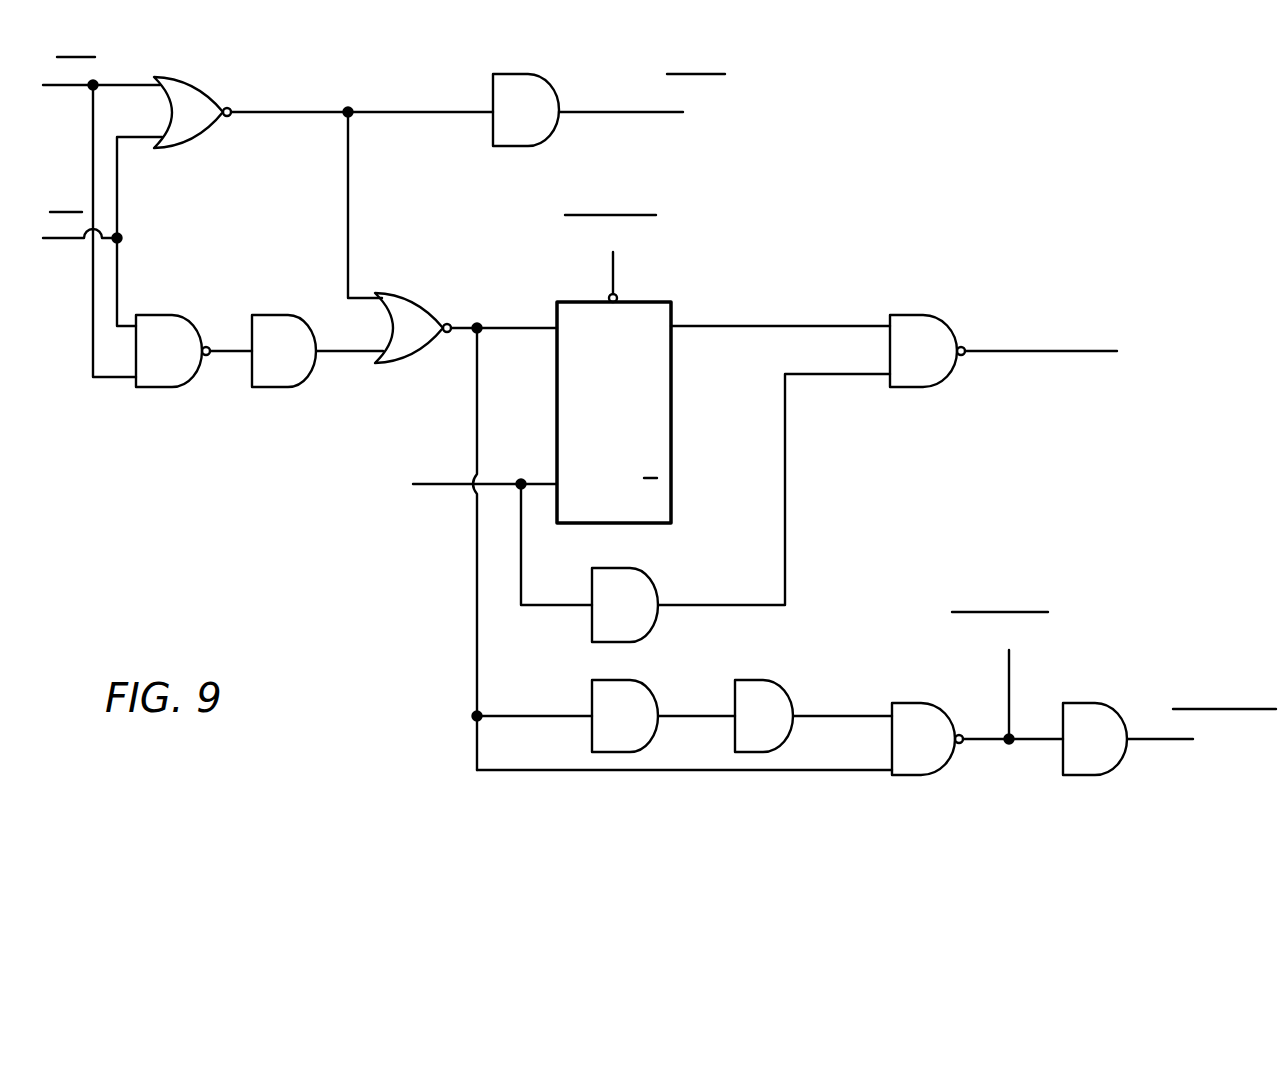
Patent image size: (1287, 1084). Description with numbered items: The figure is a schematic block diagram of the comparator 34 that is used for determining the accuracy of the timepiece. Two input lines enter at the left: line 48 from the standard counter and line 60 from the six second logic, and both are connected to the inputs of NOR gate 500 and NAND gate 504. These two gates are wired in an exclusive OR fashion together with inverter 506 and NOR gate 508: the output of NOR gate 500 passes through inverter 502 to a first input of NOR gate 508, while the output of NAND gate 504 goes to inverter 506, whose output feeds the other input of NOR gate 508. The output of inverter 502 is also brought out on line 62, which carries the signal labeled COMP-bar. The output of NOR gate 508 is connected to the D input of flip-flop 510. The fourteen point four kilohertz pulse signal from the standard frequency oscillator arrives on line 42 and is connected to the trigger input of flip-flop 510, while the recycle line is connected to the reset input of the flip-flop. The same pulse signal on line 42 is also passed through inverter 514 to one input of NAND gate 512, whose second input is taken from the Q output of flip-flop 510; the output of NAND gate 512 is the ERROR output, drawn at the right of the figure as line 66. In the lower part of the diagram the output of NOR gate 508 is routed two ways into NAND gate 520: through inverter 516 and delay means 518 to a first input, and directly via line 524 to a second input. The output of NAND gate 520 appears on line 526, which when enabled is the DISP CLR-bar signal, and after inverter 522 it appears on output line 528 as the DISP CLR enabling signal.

The comparator 34 is at (270, 562).
The line 42 is at (433, 490).
The line 48 is at (64, 243).
The line 60 is at (64, 88).
The line 62 is at (634, 113).
The ERROR output line 66 is at (1038, 349).
The NOR gate 500 is at (202, 98).
The inverter 502 is at (545, 88).
The NAND gate 504 is at (165, 380).
The inverter 506 is at (290, 382).
The NOR gate 508 is at (415, 352).
The flip-flop 510 is at (665, 301).
The NAND gate 512 is at (930, 380).
The inverter 514 is at (632, 585).
The inverter 516 is at (637, 697).
The delay means 518 is at (780, 690).
The NAND gate 520 is at (960, 695).
The inverter 522 is at (1110, 710).
The line 524 is at (660, 772).
The line 526 is at (1010, 680).
The output line 528 is at (1165, 741).